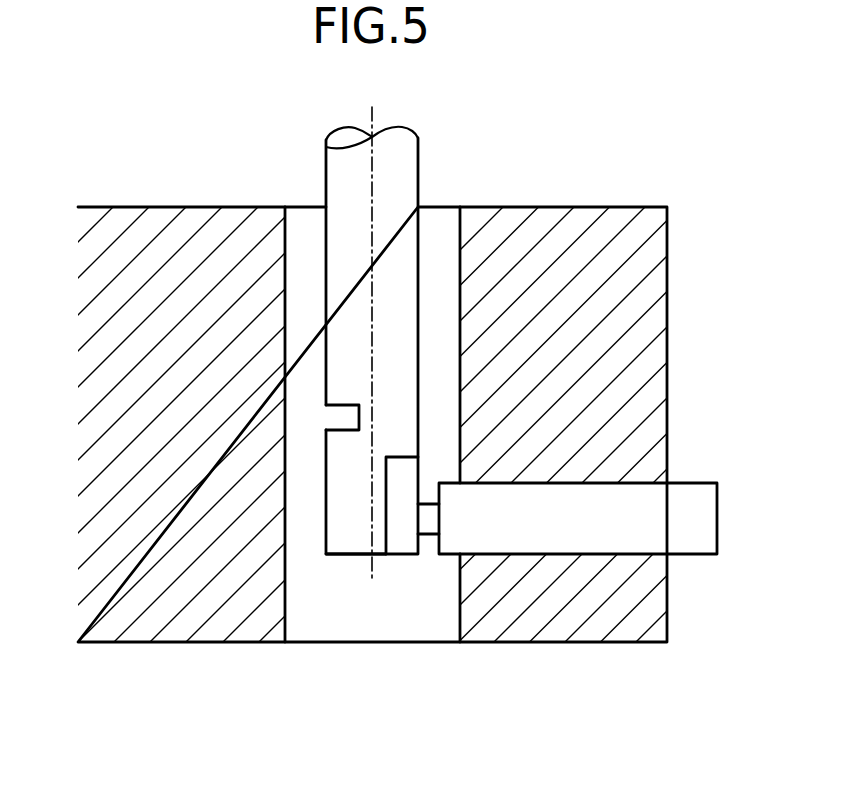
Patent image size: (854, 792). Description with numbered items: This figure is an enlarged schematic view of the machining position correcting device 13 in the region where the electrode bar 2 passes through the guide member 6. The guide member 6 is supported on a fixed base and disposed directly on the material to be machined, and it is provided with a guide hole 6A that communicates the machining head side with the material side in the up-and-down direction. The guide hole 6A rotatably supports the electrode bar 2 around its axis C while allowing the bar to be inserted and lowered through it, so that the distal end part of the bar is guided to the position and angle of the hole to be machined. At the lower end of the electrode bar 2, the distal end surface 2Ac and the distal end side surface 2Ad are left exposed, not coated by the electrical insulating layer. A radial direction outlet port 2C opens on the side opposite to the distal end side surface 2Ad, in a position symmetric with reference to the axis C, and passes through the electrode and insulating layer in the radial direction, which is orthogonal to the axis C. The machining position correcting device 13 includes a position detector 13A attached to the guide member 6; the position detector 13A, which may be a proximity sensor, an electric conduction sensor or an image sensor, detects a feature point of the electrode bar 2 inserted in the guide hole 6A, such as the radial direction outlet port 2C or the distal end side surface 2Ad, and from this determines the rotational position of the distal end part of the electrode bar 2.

The electrode bar 2 is at (216, 410).
The radial direction outlet port 2C is at (337, 417).
The distal end surface 2Ac is at (342, 555).
The distal end side surface 2Ad is at (402, 541).
The guide member 6 is at (427, 396).
The guide hole 6A is at (458, 231).
The machining position correcting device 13 is at (575, 477).
The position detector 13A is at (701, 483).
The axis C is at (372, 118).